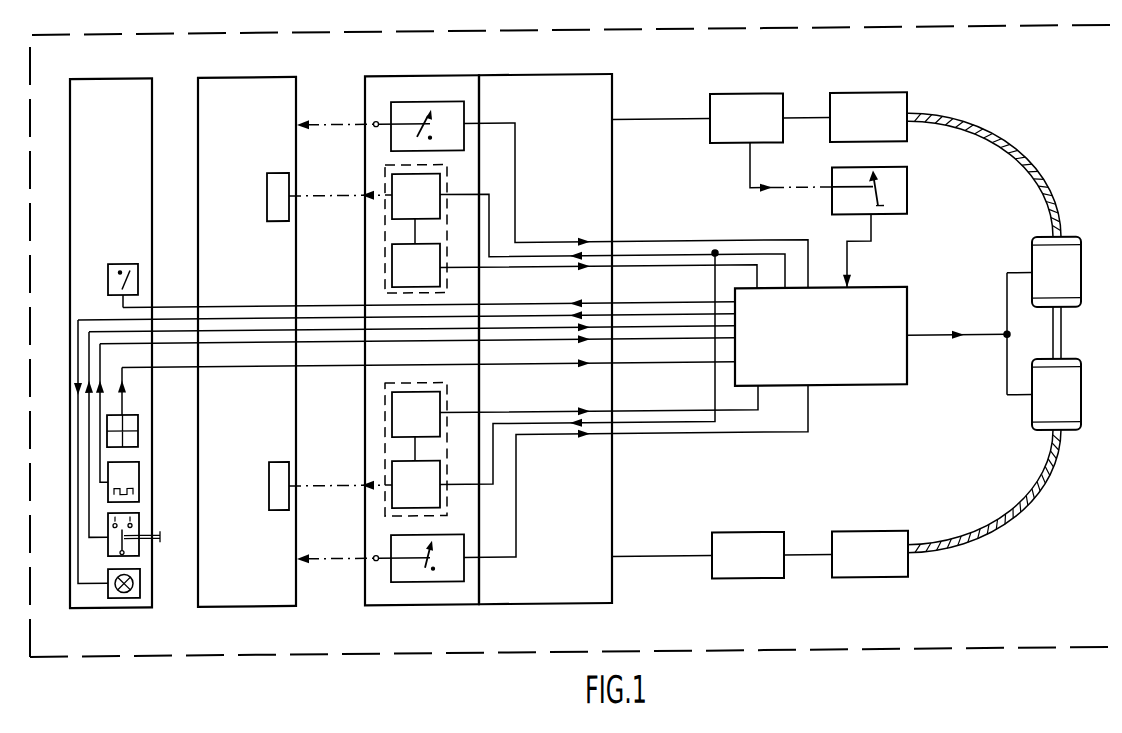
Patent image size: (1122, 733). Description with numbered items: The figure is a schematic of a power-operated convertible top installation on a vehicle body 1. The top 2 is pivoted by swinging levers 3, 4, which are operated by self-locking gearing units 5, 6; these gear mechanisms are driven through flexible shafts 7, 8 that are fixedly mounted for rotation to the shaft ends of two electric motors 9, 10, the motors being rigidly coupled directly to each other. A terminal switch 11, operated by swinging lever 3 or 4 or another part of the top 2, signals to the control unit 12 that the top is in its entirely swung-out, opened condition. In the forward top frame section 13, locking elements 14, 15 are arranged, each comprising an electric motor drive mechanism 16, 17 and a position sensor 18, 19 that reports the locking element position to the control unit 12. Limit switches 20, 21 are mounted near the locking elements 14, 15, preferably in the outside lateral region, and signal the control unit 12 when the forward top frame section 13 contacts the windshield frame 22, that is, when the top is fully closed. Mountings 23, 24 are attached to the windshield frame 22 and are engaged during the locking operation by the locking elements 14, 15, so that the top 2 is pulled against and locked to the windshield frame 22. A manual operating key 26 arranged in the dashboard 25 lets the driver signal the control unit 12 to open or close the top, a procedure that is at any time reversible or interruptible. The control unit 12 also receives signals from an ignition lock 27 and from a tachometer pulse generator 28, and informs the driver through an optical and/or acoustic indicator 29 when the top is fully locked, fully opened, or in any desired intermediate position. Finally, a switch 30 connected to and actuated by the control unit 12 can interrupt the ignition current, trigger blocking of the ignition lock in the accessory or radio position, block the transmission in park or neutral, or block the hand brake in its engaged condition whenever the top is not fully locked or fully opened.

The body of a vehicle 1 is at (528, 30).
The top 2 is at (548, 74).
The swinging lever 3 is at (742, 95).
The swinging lever 4 is at (745, 534).
The self-locking gearing unit 5 is at (865, 95).
The self-locking gearing unit 6 is at (870, 534).
The flexible shaft 7 is at (1022, 154).
The flexible shaft 8 is at (1030, 519).
The electric motor 9 is at (1081, 277).
The electric motor 10 is at (1081, 397).
The terminal switch 11 is at (907, 189).
The control unit 12 is at (877, 290).
The forward top frame section 13 is at (412, 82).
The locking element 14 is at (447, 183).
The locking element 15 is at (447, 400).
The electric motor drive mechanism 16 is at (440, 202).
The electric motor drive mechanism 17 is at (440, 466).
The position sensor 18 is at (440, 251).
The position sensor 19 is at (440, 421).
The limit switch 20 is at (430, 100).
The limit switch 21 is at (450, 533).
The windshield frame 22 is at (245, 74).
The mounting 23 is at (267, 194).
The mounting 24 is at (269, 483).
The dashboard 25 is at (112, 74).
The manual operating key 26 is at (139, 514).
The ignition lock 27 is at (138, 416).
The tachometer pulse generator 28 is at (139, 466).
The optical and/or acoustic indicator 29 is at (140, 576).
The switch 30 is at (138, 275).